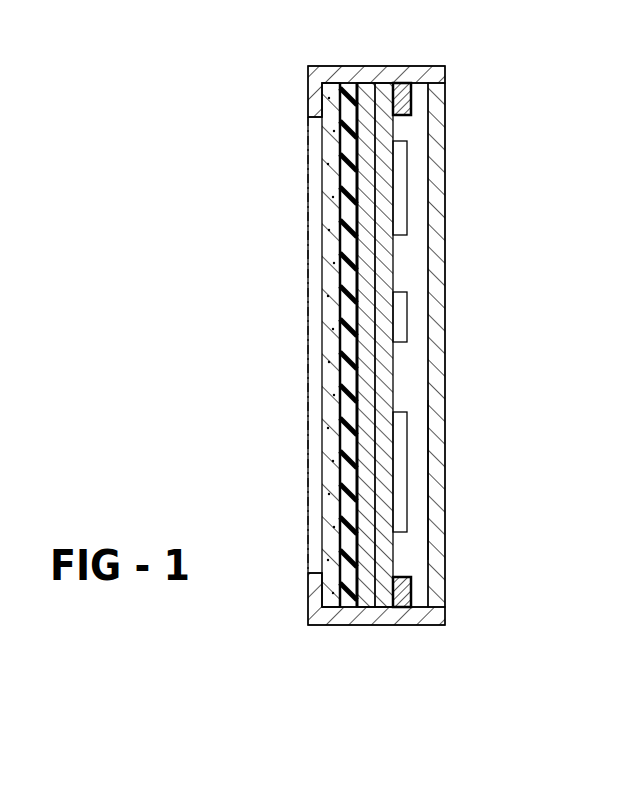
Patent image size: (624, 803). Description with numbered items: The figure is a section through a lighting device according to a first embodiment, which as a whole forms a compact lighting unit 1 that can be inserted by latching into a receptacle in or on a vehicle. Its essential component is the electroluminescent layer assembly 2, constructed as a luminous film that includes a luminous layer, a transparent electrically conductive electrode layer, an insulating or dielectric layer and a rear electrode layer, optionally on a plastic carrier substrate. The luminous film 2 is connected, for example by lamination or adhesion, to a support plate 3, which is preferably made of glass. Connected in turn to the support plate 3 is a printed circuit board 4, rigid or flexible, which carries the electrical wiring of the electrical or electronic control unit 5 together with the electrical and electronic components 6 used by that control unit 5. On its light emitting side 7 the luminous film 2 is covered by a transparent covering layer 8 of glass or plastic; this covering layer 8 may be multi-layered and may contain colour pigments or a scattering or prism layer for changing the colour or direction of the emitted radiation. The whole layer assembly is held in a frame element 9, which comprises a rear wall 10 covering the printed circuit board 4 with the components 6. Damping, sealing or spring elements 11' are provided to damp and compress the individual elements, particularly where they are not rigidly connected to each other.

The lighting unit 1 is at (501, 96).
The electroluminescent layer assembly 2 is at (342, 262).
The support plate 3 is at (375, 264).
The printed circuit board 4 is at (386, 383).
The control unit 5 is at (415, 361).
The electrical and electronic components 6 is at (403, 182).
The light emitting side 7 is at (246, 368).
The covering layer 8 is at (331, 420).
The frame element 9 is at (308, 83).
The rear wall 10 is at (427, 483).
The damping, sealing or spring elements 11' is at (450, 345).